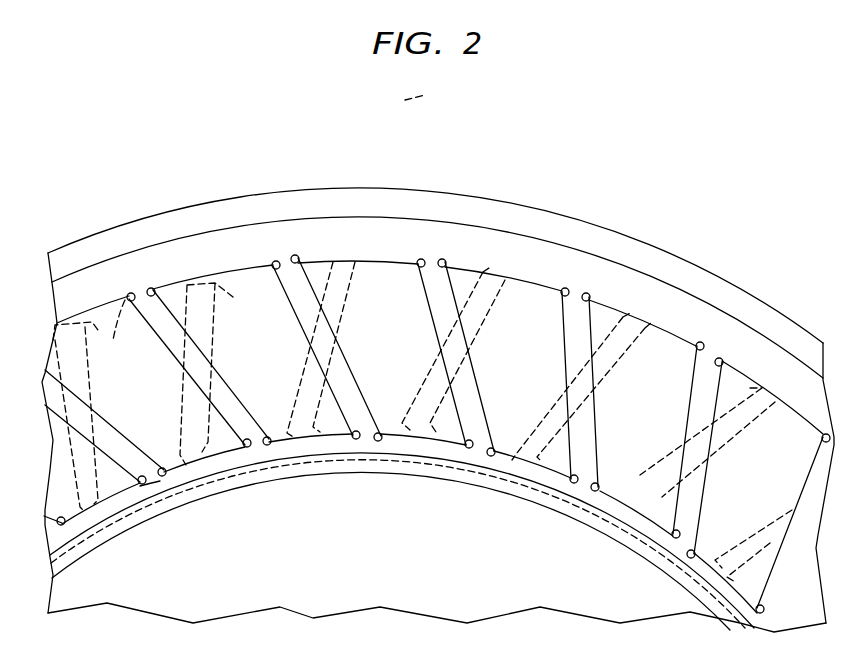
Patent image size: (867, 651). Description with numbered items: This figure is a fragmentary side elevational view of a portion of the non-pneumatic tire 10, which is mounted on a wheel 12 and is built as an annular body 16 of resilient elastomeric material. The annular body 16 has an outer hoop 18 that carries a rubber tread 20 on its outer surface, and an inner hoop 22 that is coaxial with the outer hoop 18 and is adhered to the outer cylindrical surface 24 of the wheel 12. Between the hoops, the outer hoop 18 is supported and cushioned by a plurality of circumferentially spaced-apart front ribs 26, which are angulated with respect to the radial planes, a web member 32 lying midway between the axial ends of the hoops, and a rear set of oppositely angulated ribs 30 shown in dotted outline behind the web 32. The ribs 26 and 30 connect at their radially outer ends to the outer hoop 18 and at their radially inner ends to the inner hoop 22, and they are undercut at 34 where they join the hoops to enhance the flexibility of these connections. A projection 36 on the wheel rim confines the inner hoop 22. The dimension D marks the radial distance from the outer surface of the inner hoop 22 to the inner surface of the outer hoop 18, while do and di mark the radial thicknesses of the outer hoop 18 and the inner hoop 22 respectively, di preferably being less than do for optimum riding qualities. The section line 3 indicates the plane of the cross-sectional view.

The non-pneumatic tire 10 is at (764, 277).
The wheel 12 is at (591, 589).
The annular body 16 is at (342, 212).
The outer hoop 18 is at (580, 266).
The rubber tread 20 is at (445, 192).
The inner hoop 22 is at (280, 462).
The outer cylindrical surface 24 is at (480, 480).
The front set of angulated ribs 26 is at (566, 330).
The rear set of oppositely angulated ribs 30 is at (217, 327).
The web member 32 is at (147, 399).
The undercut 34 is at (244, 500).
The projection 36 is at (147, 492).
The section line 3- 3 is at (278, 177).
The radial distance D is at (393, 270).
The radial thickness of the outer hoop do is at (668, 306).
The thickness of the inner hoop di is at (545, 442).